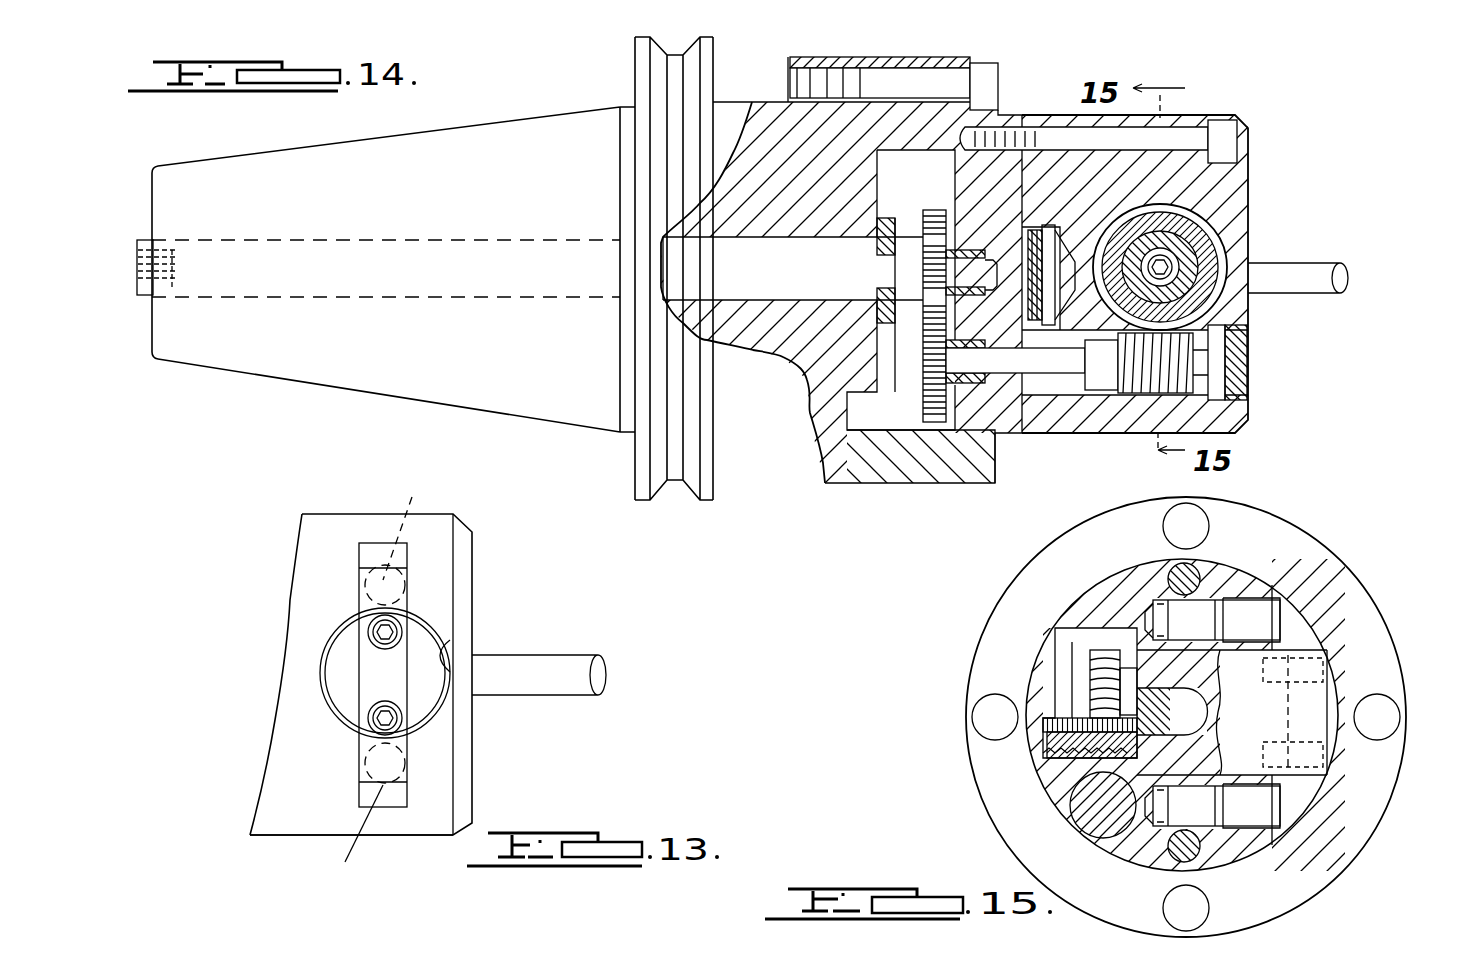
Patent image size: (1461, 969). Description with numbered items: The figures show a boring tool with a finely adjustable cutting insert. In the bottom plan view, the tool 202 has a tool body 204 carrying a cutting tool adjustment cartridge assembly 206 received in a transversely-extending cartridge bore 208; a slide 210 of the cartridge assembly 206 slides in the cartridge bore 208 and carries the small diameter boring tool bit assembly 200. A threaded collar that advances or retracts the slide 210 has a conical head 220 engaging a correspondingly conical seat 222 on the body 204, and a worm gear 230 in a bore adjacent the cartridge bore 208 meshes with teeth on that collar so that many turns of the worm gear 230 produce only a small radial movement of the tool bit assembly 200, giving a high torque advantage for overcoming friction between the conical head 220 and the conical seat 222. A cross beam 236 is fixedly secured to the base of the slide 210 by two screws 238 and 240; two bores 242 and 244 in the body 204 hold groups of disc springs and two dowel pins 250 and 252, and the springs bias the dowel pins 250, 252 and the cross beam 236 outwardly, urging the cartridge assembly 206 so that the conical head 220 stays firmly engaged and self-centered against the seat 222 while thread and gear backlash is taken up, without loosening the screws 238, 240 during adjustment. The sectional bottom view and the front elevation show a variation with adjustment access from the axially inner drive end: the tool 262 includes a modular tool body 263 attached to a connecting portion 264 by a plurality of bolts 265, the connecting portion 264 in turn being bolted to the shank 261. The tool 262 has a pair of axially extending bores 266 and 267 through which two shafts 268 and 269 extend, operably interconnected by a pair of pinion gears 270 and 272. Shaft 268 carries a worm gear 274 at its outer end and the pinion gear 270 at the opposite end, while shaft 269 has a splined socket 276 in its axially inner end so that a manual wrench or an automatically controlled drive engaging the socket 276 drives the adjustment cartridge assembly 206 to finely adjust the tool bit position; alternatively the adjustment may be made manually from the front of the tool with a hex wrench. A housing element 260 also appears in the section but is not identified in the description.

In FIG. 14, the tool bit assembly 200 is at (1323, 266).
In FIG. 13, the tool bit assembly 200 is at (566, 668).
In FIG. 13, the tool 202 is at (253, 773).
In FIG. 13, the tool body 204 is at (270, 812).
In FIG. 13, the cutting tool adjustment cartridge assembly 206 is at (306, 695).
In FIG. 15, the cutting tool adjustment cartridge assembly 206 is at (1080, 608).
In FIG. 13, the cartridge bore 208 is at (450, 655).
In FIG. 13, the slide 210 is at (332, 659).
In FIG. 15, the conical head 220 is at (1070, 752).
In FIG. 15, the conical seat 222 is at (1090, 652).
In FIG. 15, the worm gear 230 is at (1100, 690).
In FIG. 13, the cross beam 236 is at (372, 688).
In FIG. 13, the screw 238 is at (402, 632).
In FIG. 13, the screw 240 is at (402, 720).
In FIG. 13, the bore 242 is at (410, 525).
In FIG. 13, the bore 244 is at (361, 838).
In FIG. 13, the dowel pin 250 is at (358, 581).
In FIG. 13, the dowel pin 252 is at (408, 762).
In FIG. 14, the housing 260 is at (1250, 195).
In FIG. 14, the shank 261 is at (262, 358).
In FIG. 14, the tool 262 is at (1003, 474).
In FIG. 15, the tool 262 is at (1375, 646).
In FIG. 14, the modular tool body 263 is at (1135, 425).
In FIG. 15, the modular tool body 263 is at (1236, 590).
In FIG. 14, the connecting portion 264 is at (962, 483).
In FIG. 15, the connecting portion 264 is at (1338, 595).
In FIG. 14, the bolts 265 is at (1225, 136).
In FIG. 14, the axially extending bore 266 is at (1012, 398).
In FIG. 14, the axially extending bore 267 is at (700, 292).
In FIG. 14, the shaft 268 is at (1075, 373).
In FIG. 14, the shaft 269 is at (690, 265).
In FIG. 14, the pinion gear 270 is at (932, 422).
In FIG. 14, the pinion gear 272 is at (935, 210).
In FIG. 14, the worm gear 274 is at (1180, 365).
In FIG. 15, the worm gear 274 is at (1095, 790).
In FIG. 14, the splined socket 276 is at (175, 280).